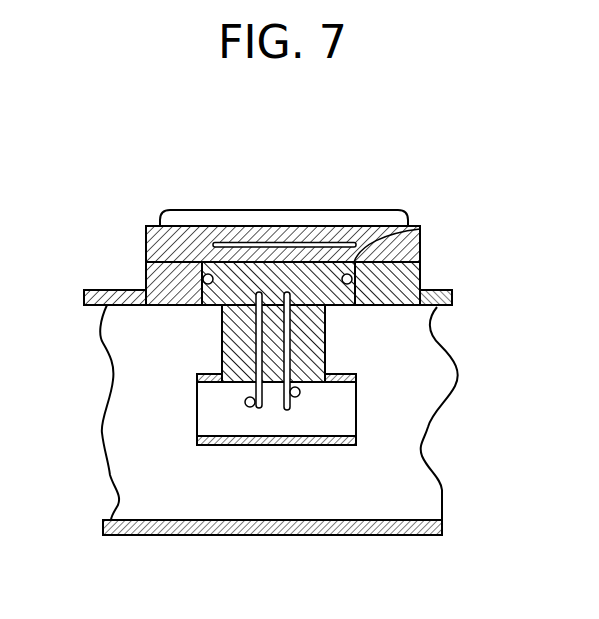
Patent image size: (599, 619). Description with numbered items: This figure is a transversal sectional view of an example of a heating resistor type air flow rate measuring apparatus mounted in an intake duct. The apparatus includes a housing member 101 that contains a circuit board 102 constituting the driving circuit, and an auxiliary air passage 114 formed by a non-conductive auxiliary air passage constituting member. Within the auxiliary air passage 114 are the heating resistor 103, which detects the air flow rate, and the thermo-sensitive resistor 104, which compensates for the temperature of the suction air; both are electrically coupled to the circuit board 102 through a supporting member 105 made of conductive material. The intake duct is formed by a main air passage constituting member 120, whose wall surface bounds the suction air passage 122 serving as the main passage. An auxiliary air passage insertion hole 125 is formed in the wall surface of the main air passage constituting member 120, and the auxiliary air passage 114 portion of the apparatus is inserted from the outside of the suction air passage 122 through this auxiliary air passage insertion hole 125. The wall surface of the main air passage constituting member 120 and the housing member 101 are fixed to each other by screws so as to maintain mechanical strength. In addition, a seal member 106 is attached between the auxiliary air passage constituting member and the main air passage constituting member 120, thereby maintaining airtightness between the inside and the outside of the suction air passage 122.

The housing member 101 is at (197, 210).
The circuit board 102 is at (320, 243).
The heating resistor 103 is at (246, 404).
The thermo-sensitive resistor 104 is at (297, 398).
The supporting member 105 is at (261, 410).
The seal member 106 is at (421, 230).
The auxiliary air passage 114 is at (332, 409).
The main air passage constituting member 120 is at (400, 282).
The suction air passage 122 is at (120, 342).
The auxiliary air passage insertion hole 125 is at (317, 328).